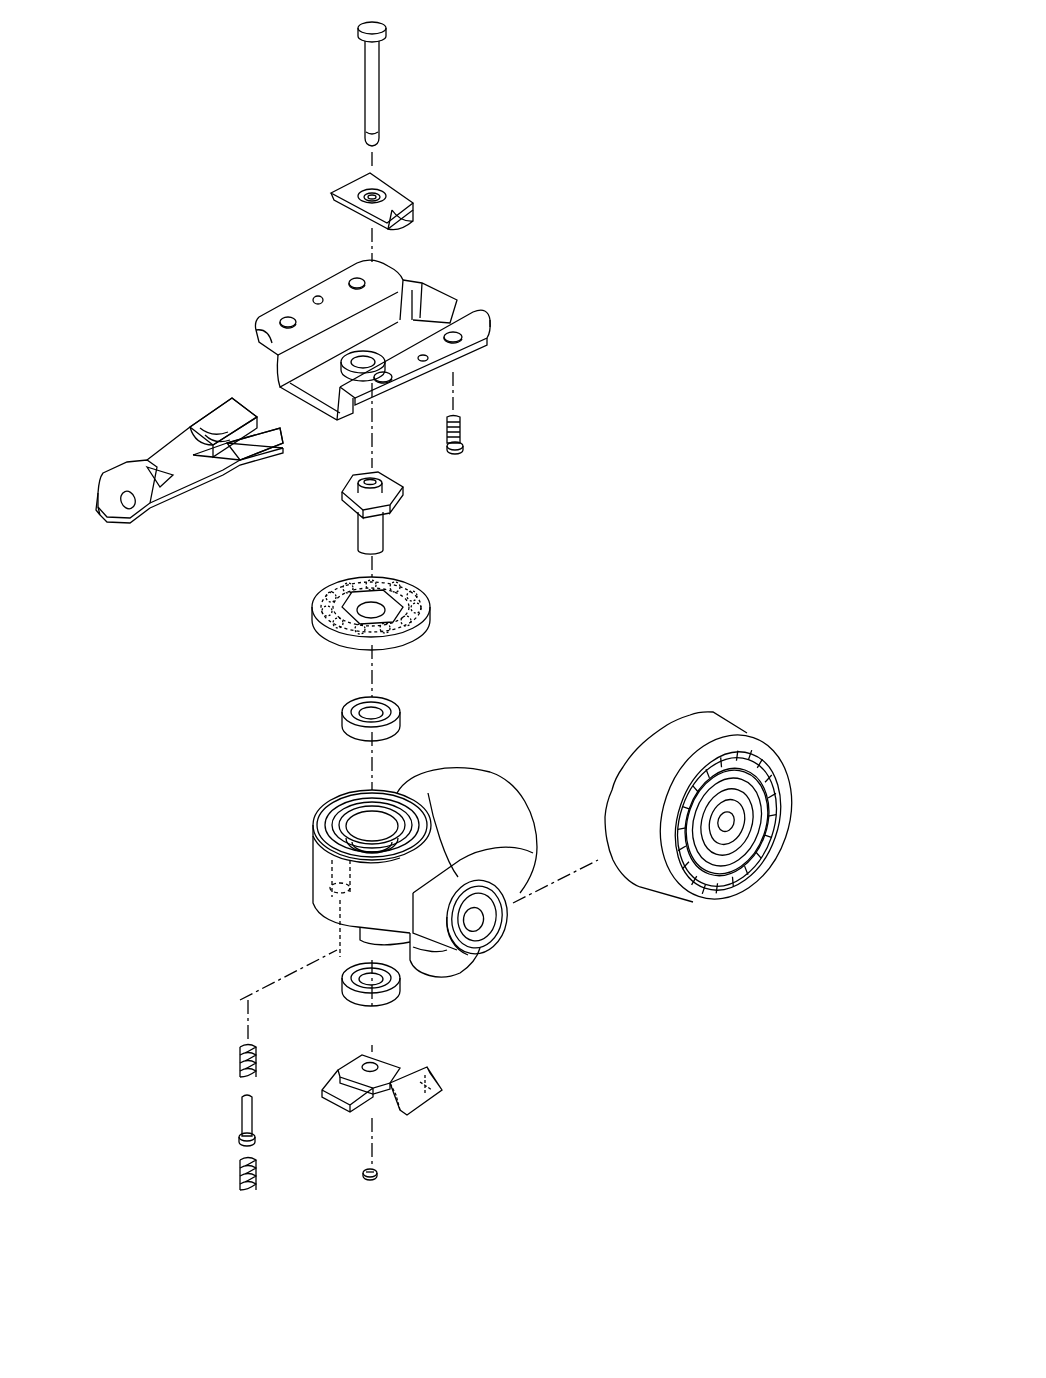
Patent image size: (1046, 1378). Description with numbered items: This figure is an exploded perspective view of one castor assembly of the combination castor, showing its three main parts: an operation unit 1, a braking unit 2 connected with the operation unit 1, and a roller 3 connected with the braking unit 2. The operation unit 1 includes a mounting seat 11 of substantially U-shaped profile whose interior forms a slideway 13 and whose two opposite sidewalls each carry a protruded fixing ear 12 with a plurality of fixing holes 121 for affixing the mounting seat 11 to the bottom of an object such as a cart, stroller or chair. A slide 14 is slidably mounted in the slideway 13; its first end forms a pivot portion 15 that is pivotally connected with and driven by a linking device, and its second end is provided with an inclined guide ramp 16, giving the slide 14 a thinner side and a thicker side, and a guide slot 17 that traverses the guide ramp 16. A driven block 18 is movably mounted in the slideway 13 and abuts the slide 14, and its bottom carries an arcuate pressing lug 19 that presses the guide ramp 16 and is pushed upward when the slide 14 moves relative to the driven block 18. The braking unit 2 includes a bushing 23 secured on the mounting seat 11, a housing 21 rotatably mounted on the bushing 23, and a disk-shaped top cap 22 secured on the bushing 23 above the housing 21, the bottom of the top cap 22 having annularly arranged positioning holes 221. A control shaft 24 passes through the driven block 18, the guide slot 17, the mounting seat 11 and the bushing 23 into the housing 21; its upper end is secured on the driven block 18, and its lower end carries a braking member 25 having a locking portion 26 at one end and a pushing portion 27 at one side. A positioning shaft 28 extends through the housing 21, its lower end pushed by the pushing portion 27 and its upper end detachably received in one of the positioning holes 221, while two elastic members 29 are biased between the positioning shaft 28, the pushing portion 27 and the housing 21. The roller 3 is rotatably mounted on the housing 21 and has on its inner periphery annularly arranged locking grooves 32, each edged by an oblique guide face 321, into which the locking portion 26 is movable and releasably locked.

The operation unit 1 is at (620, 272).
The mounting seat 11 is at (432, 310).
The fixing ear 12 is at (480, 328).
The fixing holes 121 is at (457, 340).
The slideway 13 is at (393, 335).
The slide 14 is at (188, 488).
The pivot portion 15 is at (113, 507).
The guide ramp 16 is at (237, 452).
The guide slot 17 is at (207, 437).
The driven block 18 is at (392, 202).
The pressing lug 19 is at (403, 218).
The braking unit 2 is at (593, 562).
The housing 21 is at (495, 793).
The top cap 22 is at (430, 627).
The positioning holes 221 is at (417, 598).
The bushing 23 is at (378, 528).
The control shaft 24 is at (374, 80).
The braking member 25 is at (380, 1075).
The locking portion 26 is at (433, 1092).
The pushing portion 27 is at (340, 1098).
The positioning shaft 28 is at (240, 1118).
The elastic members 29 is at (237, 1063).
The roller 3 is at (730, 1010).
The locking grooves 32 is at (747, 847).
The oblique guide face 321 is at (723, 867).